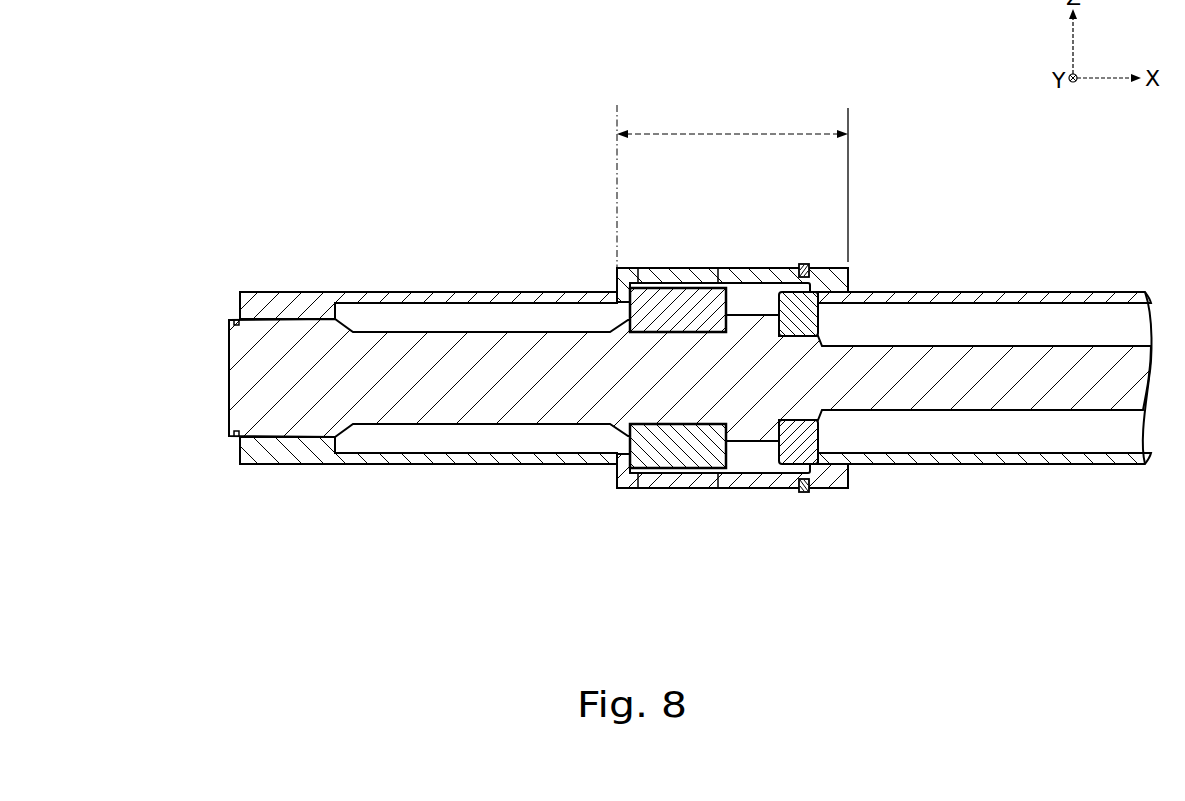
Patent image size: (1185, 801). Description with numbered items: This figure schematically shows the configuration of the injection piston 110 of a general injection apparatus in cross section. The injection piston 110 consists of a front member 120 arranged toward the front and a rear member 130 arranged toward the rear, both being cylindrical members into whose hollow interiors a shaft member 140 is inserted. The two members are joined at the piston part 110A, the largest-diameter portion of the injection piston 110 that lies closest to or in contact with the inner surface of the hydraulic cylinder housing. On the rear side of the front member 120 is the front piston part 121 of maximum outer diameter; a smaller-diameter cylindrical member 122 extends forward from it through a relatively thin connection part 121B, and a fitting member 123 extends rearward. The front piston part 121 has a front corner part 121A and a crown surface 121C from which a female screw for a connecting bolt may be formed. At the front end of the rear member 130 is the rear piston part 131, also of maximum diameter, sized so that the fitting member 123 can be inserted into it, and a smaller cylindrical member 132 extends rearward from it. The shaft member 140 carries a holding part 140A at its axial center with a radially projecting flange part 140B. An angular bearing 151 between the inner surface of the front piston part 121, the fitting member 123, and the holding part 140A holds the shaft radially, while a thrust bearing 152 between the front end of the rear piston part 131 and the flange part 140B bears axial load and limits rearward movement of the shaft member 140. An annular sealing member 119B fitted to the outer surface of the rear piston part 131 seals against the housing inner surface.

The injection piston 110 is at (285, 117).
The piston part 110A is at (732, 186).
The front member 120 is at (474, 232).
The front piston part 121 is at (627, 268).
The corner part 121A is at (611, 494).
The connection part 121B is at (613, 475).
The crown surface 121C is at (588, 268).
The cylindrical member 122 is at (388, 291).
The fitting member 123 is at (678, 268).
The rear member 130 is at (969, 232).
The rear piston part 131 is at (850, 275).
The cylindrical member 132 is at (1030, 300).
The shaft member 140 is at (228, 350).
The holding part 140A is at (759, 268).
The flange part 140B is at (757, 430).
The angular bearing 151 is at (672, 476).
The thrust bearing 152 is at (855, 480).
The sealing member 119B is at (801, 493).